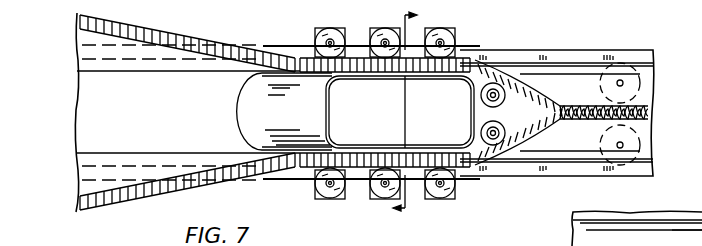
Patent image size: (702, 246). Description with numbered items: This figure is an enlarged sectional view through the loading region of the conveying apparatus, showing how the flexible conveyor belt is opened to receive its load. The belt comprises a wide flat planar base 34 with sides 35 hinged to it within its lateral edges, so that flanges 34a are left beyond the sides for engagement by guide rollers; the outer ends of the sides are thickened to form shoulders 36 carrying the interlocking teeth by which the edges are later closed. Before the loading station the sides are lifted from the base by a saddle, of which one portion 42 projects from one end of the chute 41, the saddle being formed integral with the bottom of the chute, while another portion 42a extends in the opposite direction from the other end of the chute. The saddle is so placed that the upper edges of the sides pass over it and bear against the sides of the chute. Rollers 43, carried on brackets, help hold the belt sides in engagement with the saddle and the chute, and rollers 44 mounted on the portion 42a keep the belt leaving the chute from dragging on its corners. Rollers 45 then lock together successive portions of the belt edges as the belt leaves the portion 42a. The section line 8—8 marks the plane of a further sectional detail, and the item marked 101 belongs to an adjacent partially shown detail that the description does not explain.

The base 34 is at (77, 110).
The sides 35 is at (88, 44).
The chute 41 is at (338, 118).
The portion of saddle 42 is at (266, 100).
The portion of saddle 42a is at (561, 112).
The rollers 43 is at (327, 34).
The rollers 44 is at (480, 100).
The rollers 45 is at (668, 145).
The flanges 34a is at (566, 50).
The section line 8— 8 is at (407, 111).
The rail 101 is at (612, 245).
The shoulders 36 is at (673, 230).